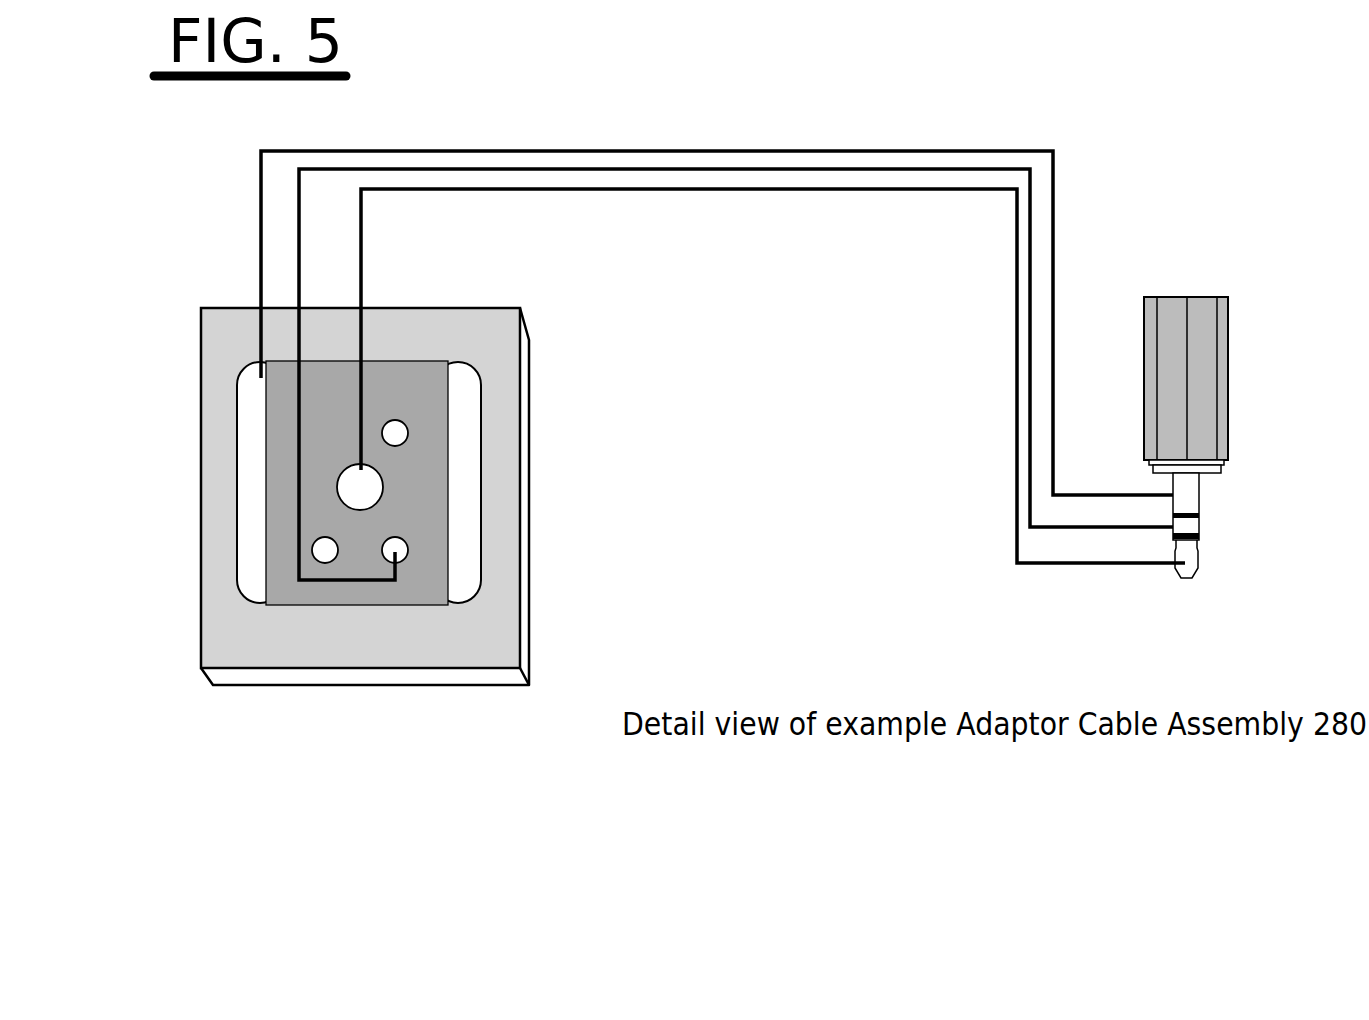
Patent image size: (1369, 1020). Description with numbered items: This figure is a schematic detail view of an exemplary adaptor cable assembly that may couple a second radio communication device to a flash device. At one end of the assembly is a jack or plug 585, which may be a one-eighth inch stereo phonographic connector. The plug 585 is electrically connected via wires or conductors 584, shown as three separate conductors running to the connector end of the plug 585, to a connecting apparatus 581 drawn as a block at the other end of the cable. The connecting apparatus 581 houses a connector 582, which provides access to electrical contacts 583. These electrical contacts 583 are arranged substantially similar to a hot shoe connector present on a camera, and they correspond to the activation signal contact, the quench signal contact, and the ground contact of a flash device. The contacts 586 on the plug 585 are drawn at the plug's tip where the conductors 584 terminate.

The connecting apparatus 581 is at (310, 703).
The connector 582 is at (402, 625).
The electrical contacts 583 is at (356, 542).
The wires or conductors 584 is at (723, 344).
The jack or plug 585 is at (1219, 385).
The plug contacts 586 is at (1231, 534).